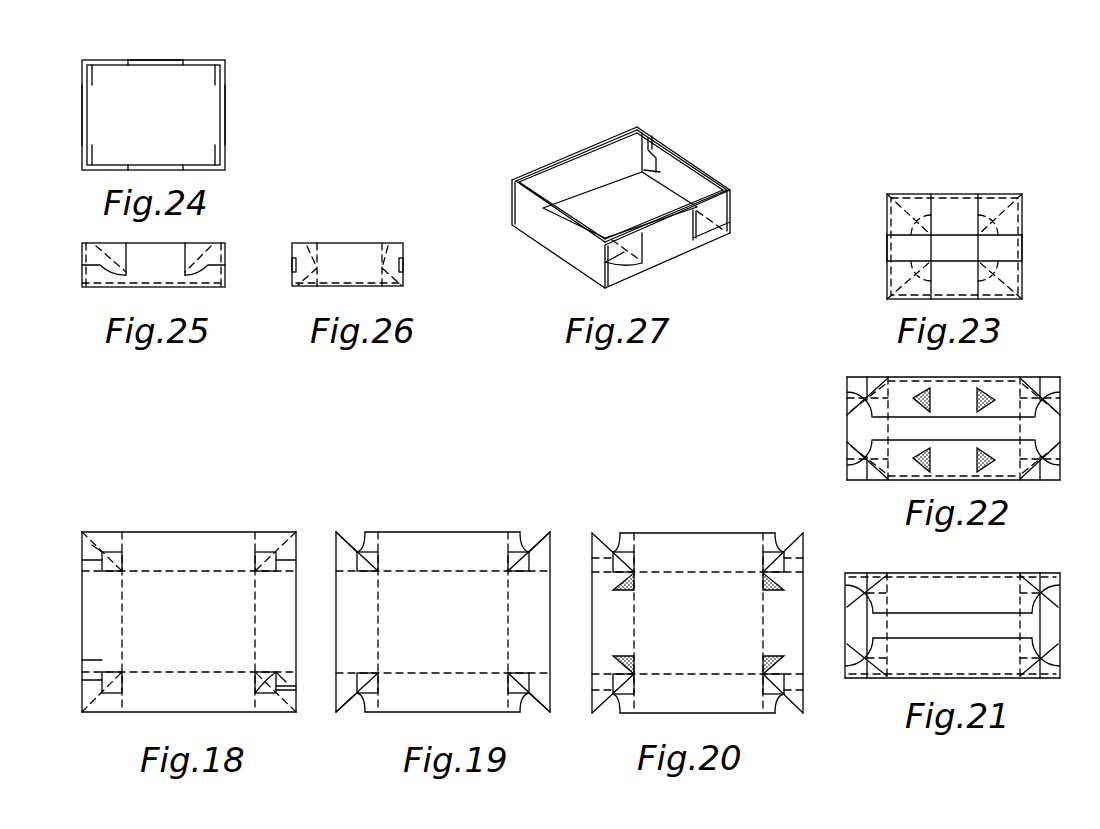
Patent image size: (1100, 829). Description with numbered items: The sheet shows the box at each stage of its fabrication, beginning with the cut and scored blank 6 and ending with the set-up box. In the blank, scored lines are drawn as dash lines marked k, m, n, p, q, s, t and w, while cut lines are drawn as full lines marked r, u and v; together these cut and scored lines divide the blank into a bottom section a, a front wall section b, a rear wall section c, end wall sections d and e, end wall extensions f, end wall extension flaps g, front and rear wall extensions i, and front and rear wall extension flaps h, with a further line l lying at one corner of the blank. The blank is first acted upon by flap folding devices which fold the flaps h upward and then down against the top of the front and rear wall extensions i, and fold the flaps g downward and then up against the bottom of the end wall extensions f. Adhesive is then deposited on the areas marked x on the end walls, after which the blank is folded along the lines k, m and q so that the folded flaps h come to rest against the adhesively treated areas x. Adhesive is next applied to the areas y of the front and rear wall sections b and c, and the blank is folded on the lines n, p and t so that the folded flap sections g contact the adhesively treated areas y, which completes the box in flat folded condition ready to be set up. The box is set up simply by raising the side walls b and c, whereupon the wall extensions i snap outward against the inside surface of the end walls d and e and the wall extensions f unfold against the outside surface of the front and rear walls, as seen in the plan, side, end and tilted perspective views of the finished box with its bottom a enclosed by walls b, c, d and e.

In FIG. 24, the bottom section a is at (153, 115).
In FIG. 27, the bottom section a is at (620, 185).
In FIG. 23, the bottom section a is at (954, 246).
In FIG. 22, the bottom section a is at (953, 428).
In FIG. 21, the bottom section a is at (952, 625).
In FIG. 18, the bottom section a is at (189, 622).
In FIG. 19, the bottom section a is at (443, 622).
In FIG. 20, the bottom section a is at (697, 623).
In FIG. 25, the front wall section b is at (153, 265).
In FIG. 27, the front wall section b is at (667, 239).
In FIG. 23, the front wall section b is at (954, 280).
In FIG. 22, the front wall section b is at (953, 464).
In FIG. 21, the front wall section b is at (952, 662).
In FIG. 18, the front wall section b is at (189, 697).
In FIG. 19, the front wall section b is at (442, 695).
In FIG. 20, the front wall section b is at (697, 699).
In FIG. 24, the rear wall section c is at (168, 60).
In FIG. 27, the rear wall section c is at (574, 157).
In FIG. 23, the rear wall section c is at (954, 214).
In FIG. 22, the rear wall section c is at (953, 392).
In FIG. 21, the rear wall section c is at (952, 590).
In FIG. 18, the rear wall section c is at (189, 548).
In FIG. 19, the rear wall section c is at (442, 547).
In FIG. 20, the rear wall section c is at (697, 551).
In FIG. 24, the end wall section d is at (82, 105).
In FIG. 27, the end wall section d is at (558, 234).
In FIG. 23, the end wall section d is at (902, 248).
In FIG. 22, the end wall section d is at (859, 428).
In FIG. 21, the end wall section d is at (866, 625).
In FIG. 18, the end wall section d is at (96, 622).
In FIG. 19, the end wall section d is at (351, 622).
In FIG. 20, the end wall section d is at (606, 623).
In FIG. 24, the end wall section e is at (225, 100).
In FIG. 26, the end wall section e is at (347, 264).
In FIG. 27, the end wall section e is at (683, 180).
In FIG. 23, the end wall section e is at (1008, 248).
In FIG. 22, the end wall section e is at (1047, 428).
In FIG. 21, the end wall section e is at (1040, 625).
In FIG. 18, the end wall section e is at (283, 622).
In FIG. 19, the end wall section e is at (537, 622).
In FIG. 20, the end wall section e is at (790, 623).
In FIG. 25, the end wall extension f is at (96, 243).
In FIG. 27, the end wall extension f is at (732, 206).
In FIG. 18, the end wall extension f is at (85, 683).
In FIG. 25, the end wall extension flap g is at (100, 266).
In FIG. 27, the end wall extension flap g is at (712, 226).
In FIG. 18, the end wall extension flap g is at (100, 705).
In FIG. 19, the end wall extension flap g is at (357, 552).
In FIG. 27, the front and rear wall extension flap h is at (657, 171).
In FIG. 22, the front and rear wall extension flap h is at (848, 398).
In FIG. 18, the front and rear wall extension flap h is at (118, 668).
In FIG. 19, the front and rear wall extension flap h is at (385, 550).
In FIG. 27, the front and rear wall extension i is at (655, 152).
In FIG. 18, the front and rear wall extension i is at (262, 692).
In FIG. 18, the scored line k is at (212, 576).
In FIG. 20, the scored line k is at (715, 579).
In FIG. 18, the cut line l is at (260, 546).
In FIG. 18, the scored line m is at (182, 673).
In FIG. 20, the scored line m is at (705, 669).
In FIG. 18, the scored line n is at (255, 629).
In FIG. 18, the scored line p is at (124, 596).
In FIG. 25, the scored line q is at (208, 266).
In FIG. 18, the scored line q is at (95, 556).
In FIG. 20, the scored line q is at (600, 573).
In FIG. 18, the cut line r is at (105, 576).
In FIG. 18, the scored line s is at (115, 551).
In FIG. 18, the scored line t is at (125, 549).
In FIG. 18, the cut line u is at (92, 556).
In FIG. 18, the cut line v is at (105, 549).
In FIG. 18, the scored line w is at (95, 546).
In FIG. 20, the adhesively treated area x is at (636, 589).
In FIG. 22, the adhesively treated area y is at (916, 395).
In FIG. 18, the blank 6 is at (80, 621).